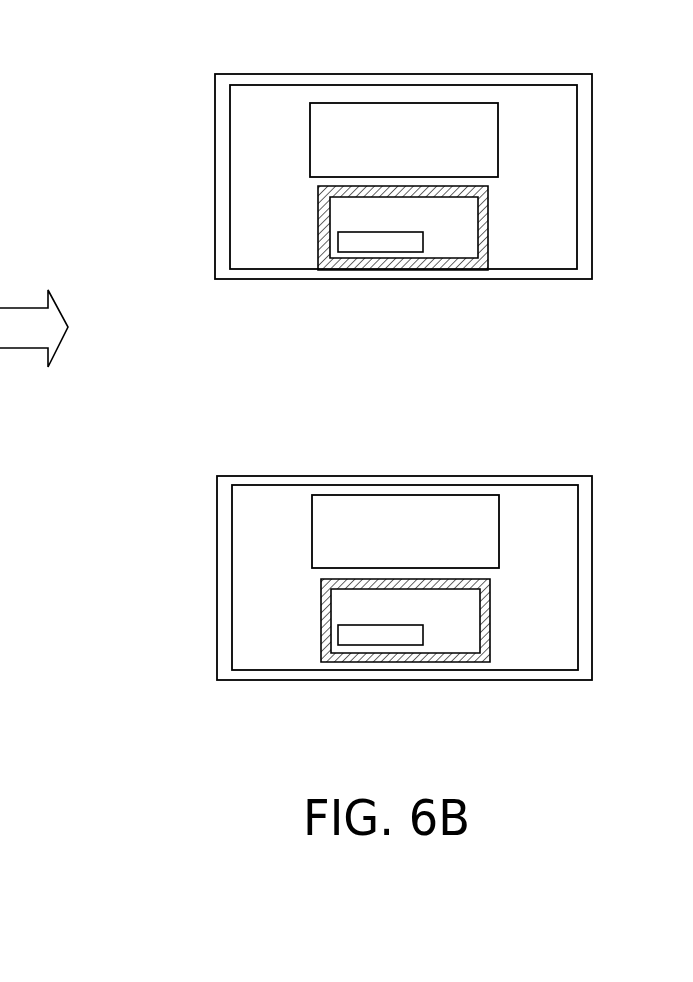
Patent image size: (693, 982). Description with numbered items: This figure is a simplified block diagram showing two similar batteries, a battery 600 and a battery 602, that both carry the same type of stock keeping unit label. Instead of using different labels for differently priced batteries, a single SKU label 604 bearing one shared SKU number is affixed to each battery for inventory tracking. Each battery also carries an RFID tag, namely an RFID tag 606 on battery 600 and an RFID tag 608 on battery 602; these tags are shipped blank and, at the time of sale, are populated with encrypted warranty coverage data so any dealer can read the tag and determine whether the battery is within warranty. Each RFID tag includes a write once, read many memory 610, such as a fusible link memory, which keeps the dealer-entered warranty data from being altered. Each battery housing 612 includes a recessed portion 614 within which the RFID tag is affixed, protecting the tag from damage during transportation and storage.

The battery 600 is at (450, 74).
The battery 602 is at (490, 476).
The SKU label 604 is at (496, 138).
The RFID tag 606 is at (457, 250).
The RFID tag 608 is at (462, 633).
The write once, read many memory 610 is at (357, 238).
The battery housing 612 is at (230, 178).
The recessed portion 614 is at (318, 228).